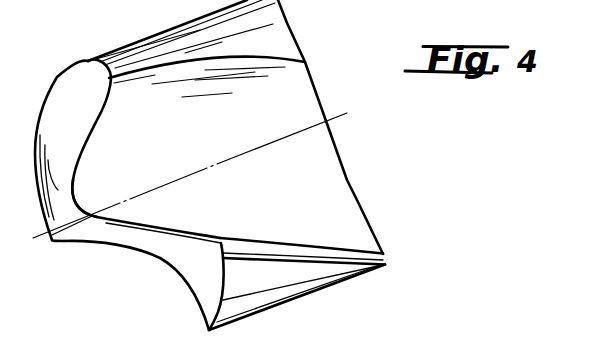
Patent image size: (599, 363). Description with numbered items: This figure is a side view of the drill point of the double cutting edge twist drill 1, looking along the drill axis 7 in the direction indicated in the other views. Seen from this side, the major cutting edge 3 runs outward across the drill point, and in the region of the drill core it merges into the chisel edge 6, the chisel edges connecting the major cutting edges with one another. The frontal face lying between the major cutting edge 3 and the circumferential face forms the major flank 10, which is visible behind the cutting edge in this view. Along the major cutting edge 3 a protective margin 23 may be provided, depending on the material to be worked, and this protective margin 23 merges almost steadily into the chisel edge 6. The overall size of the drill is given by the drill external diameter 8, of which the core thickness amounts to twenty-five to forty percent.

The double cutting edge twist drill 1 is at (263, 314).
The major cutting edge 3 is at (167, 234).
The chisel edge 6 is at (76, 220).
The drill axis 7 is at (275, 143).
The drill external diameter 8 is at (546, 362).
The major flank 10 is at (68, 99).
The protective margin 23 is at (212, 237).